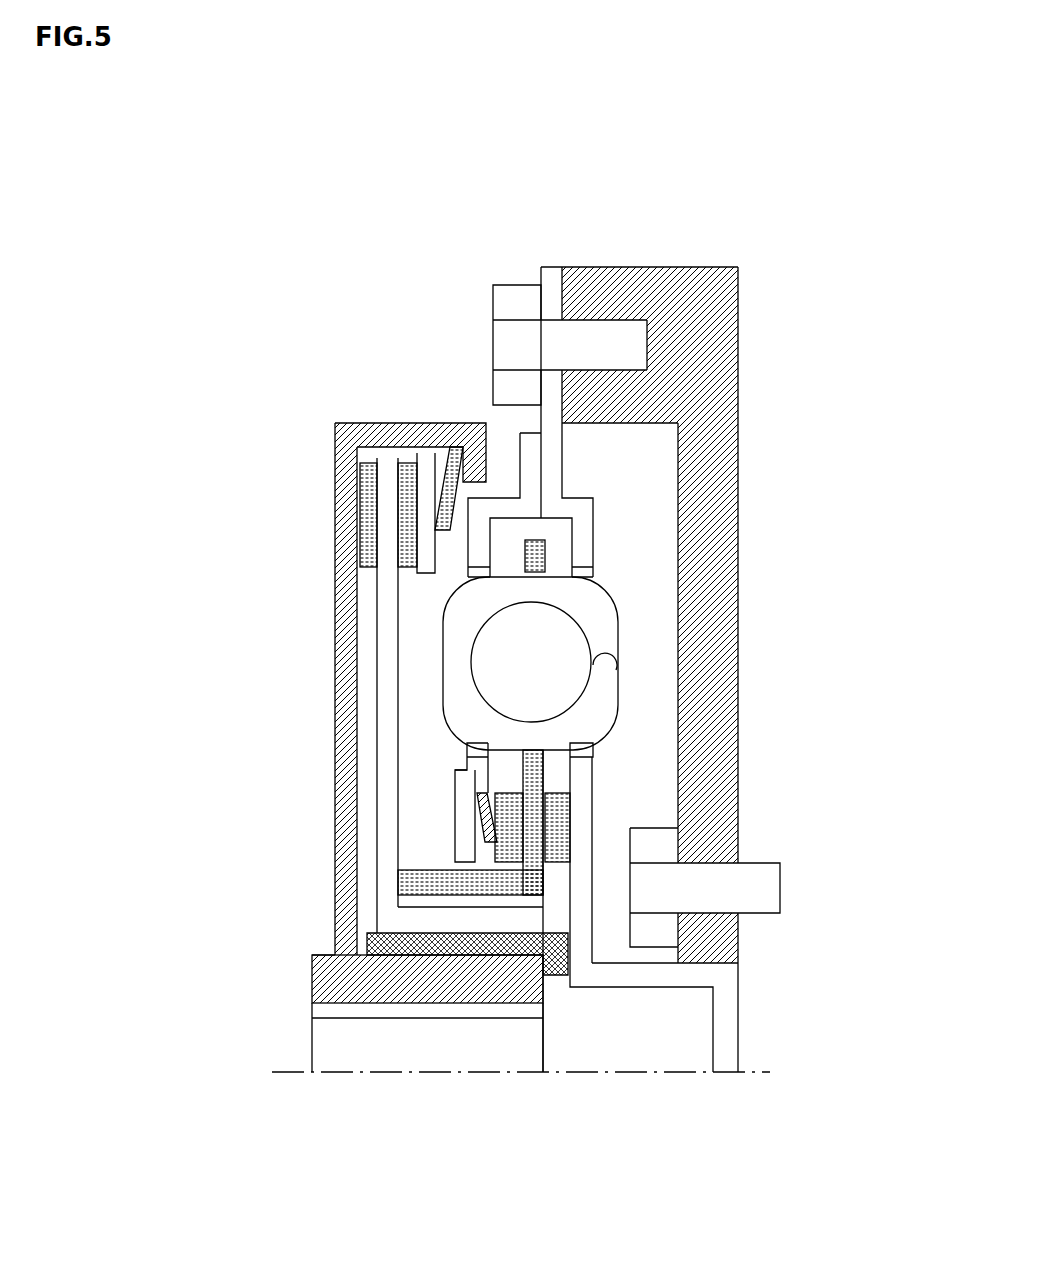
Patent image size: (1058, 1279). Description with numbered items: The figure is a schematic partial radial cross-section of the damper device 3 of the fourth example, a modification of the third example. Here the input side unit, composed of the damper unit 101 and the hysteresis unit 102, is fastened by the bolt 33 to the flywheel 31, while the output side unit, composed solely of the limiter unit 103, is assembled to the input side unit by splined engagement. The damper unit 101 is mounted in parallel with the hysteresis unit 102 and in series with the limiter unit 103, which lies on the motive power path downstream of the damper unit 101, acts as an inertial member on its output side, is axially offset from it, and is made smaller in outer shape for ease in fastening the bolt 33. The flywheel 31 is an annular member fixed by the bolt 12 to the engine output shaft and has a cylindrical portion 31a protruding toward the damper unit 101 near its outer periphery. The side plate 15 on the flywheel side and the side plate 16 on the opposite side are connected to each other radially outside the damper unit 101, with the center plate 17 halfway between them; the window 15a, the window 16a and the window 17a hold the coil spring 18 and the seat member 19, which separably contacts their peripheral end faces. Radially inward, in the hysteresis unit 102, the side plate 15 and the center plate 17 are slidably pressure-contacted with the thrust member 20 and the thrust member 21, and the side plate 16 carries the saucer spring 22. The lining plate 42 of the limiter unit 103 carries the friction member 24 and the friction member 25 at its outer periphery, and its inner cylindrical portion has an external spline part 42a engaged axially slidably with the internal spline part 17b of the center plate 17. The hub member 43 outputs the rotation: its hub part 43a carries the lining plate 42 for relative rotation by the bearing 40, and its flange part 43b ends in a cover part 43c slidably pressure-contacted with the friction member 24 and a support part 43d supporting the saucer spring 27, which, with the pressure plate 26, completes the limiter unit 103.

The damper device 3 is at (800, 243).
The bolt 12 is at (770, 892).
The side plate 15 is at (583, 522).
The window 15a is at (583, 573).
The side plate 16 is at (477, 555).
The window 16a is at (462, 760).
The center plate 17 is at (548, 781).
The window 17a is at (548, 763).
The internal spline part 17b is at (470, 890).
The coil spring 18 is at (607, 672).
The seat member 19 is at (603, 598).
The thrust member 20 is at (572, 808).
The thrust member 21 is at (483, 850).
The saucer spring 22 is at (497, 820).
The friction member 24 is at (362, 470).
The friction member 25 is at (403, 440).
The pressure plate 26 is at (408, 468).
The saucer spring 27 is at (428, 462).
The flywheel 31 is at (727, 470).
The cylindrical portion 31a is at (635, 285).
The bolt 33 is at (505, 338).
The bearing 40 is at (557, 977).
The lining plate 42 is at (385, 705).
The external spline part 42a is at (477, 908).
The hub member 43 is at (312, 1003).
The hub part 43a is at (320, 980).
The flange part 43b is at (337, 658).
The cover part 43c is at (343, 540).
The support part 43d is at (487, 450).
The damper unit 101 is at (640, 640).
The hysteresis unit 102 is at (607, 824).
The limiter unit 103 is at (317, 500).